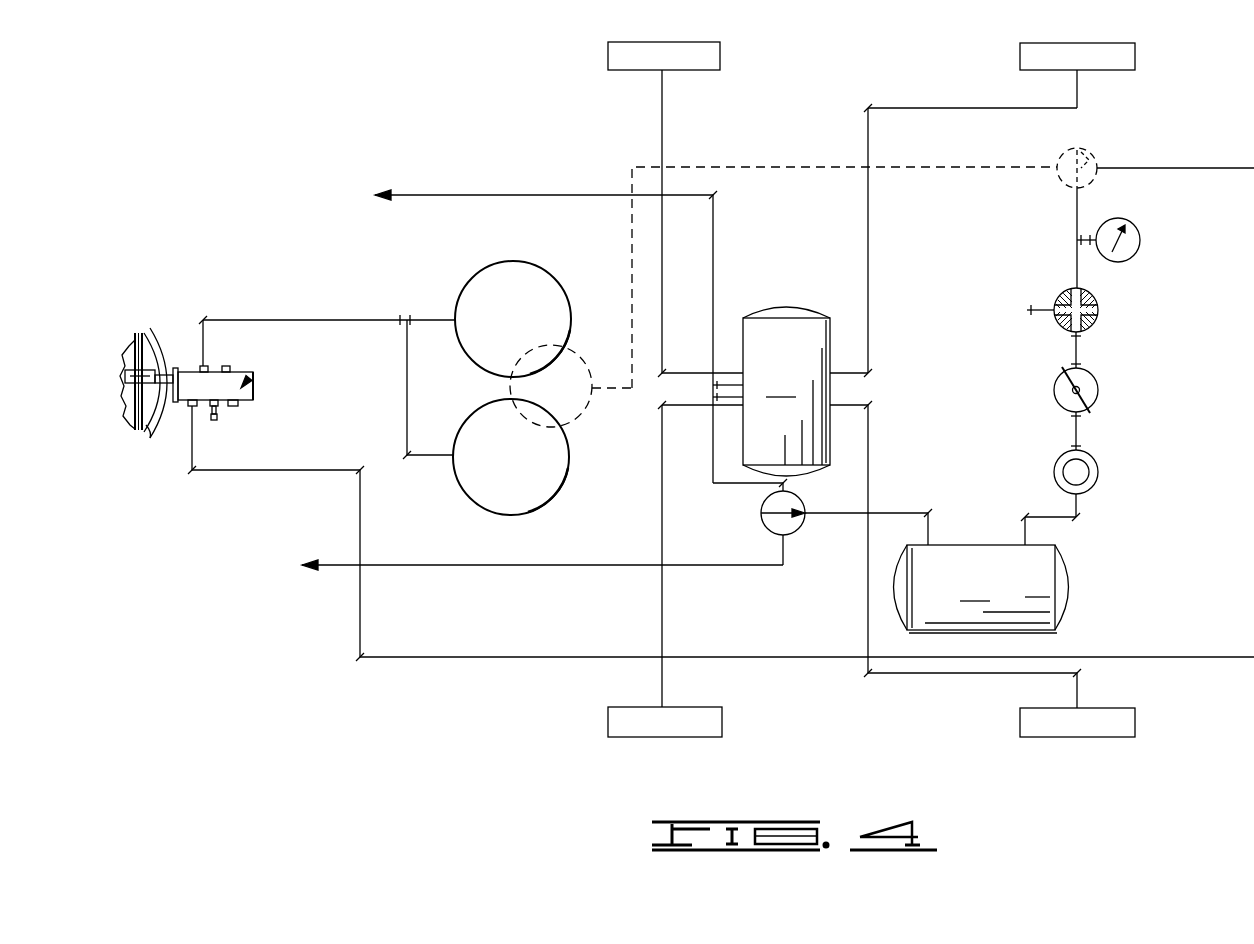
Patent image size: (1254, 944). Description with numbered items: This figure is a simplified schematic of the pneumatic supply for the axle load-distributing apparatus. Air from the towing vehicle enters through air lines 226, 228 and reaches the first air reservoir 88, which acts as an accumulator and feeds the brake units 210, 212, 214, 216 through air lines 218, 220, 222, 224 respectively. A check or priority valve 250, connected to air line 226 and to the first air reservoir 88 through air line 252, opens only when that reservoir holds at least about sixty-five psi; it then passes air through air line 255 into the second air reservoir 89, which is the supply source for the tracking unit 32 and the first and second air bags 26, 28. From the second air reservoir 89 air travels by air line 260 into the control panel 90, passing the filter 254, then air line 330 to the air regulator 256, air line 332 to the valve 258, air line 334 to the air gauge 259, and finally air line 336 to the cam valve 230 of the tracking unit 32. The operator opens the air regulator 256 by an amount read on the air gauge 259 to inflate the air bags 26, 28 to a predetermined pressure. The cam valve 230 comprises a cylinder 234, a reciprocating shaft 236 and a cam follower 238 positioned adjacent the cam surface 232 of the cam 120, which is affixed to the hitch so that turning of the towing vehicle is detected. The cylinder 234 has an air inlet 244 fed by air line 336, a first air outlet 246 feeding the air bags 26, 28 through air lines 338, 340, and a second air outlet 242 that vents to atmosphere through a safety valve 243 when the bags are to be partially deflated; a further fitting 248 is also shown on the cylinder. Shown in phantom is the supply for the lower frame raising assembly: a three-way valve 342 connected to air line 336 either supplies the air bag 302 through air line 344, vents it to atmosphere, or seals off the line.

The first air bag 26 is at (548, 458).
The second air bag 28 is at (516, 270).
The tracking unit 32 is at (266, 388).
The first air reservoir 88 is at (786, 391).
The second air reservoir 89 is at (981, 589).
The control panel 90 is at (1122, 332).
The cam 120 is at (131, 366).
The brake unit 210 is at (722, 722).
The brake unit 212 is at (720, 55).
The brake unit 214 is at (1135, 722).
The brake unit 216 is at (1020, 52).
The air line 218 is at (661, 533).
The air line 220 is at (663, 268).
The air line 222 is at (866, 593).
The air line 224 is at (869, 240).
The air line 226 is at (480, 566).
The air line 228 is at (467, 195).
The cam valve 230 is at (251, 376).
The cam surface 232 is at (137, 334).
The cylinder 234 is at (253, 397).
The reciprocating shaft 236 is at (163, 345).
The cam follower 238 is at (150, 428).
The second air outlet 242 is at (211, 408).
The safety valve 243 is at (216, 420).
The air inlet 244 is at (191, 420).
The first air outlet 246 is at (208, 368).
The port 248 is at (235, 407).
The priority valve 250 is at (802, 527).
The air line 252 is at (750, 483).
The filter 254 is at (1098, 470).
The air line 255 is at (903, 513).
The air regulator 256 is at (1098, 390).
The valve 258 is at (1098, 307).
The air gauge 259 is at (1141, 240).
The air line 260 is at (1052, 515).
The air bag 302 is at (570, 355).
The air line 330 is at (1078, 433).
The air line 332 is at (1078, 352).
The air line 334 is at (1078, 270).
The air line 336 is at (1078, 210).
The air line 338 is at (268, 320).
The air line 340 is at (406, 368).
The valve 342 is at (1090, 150).
The air line 344 is at (728, 167).